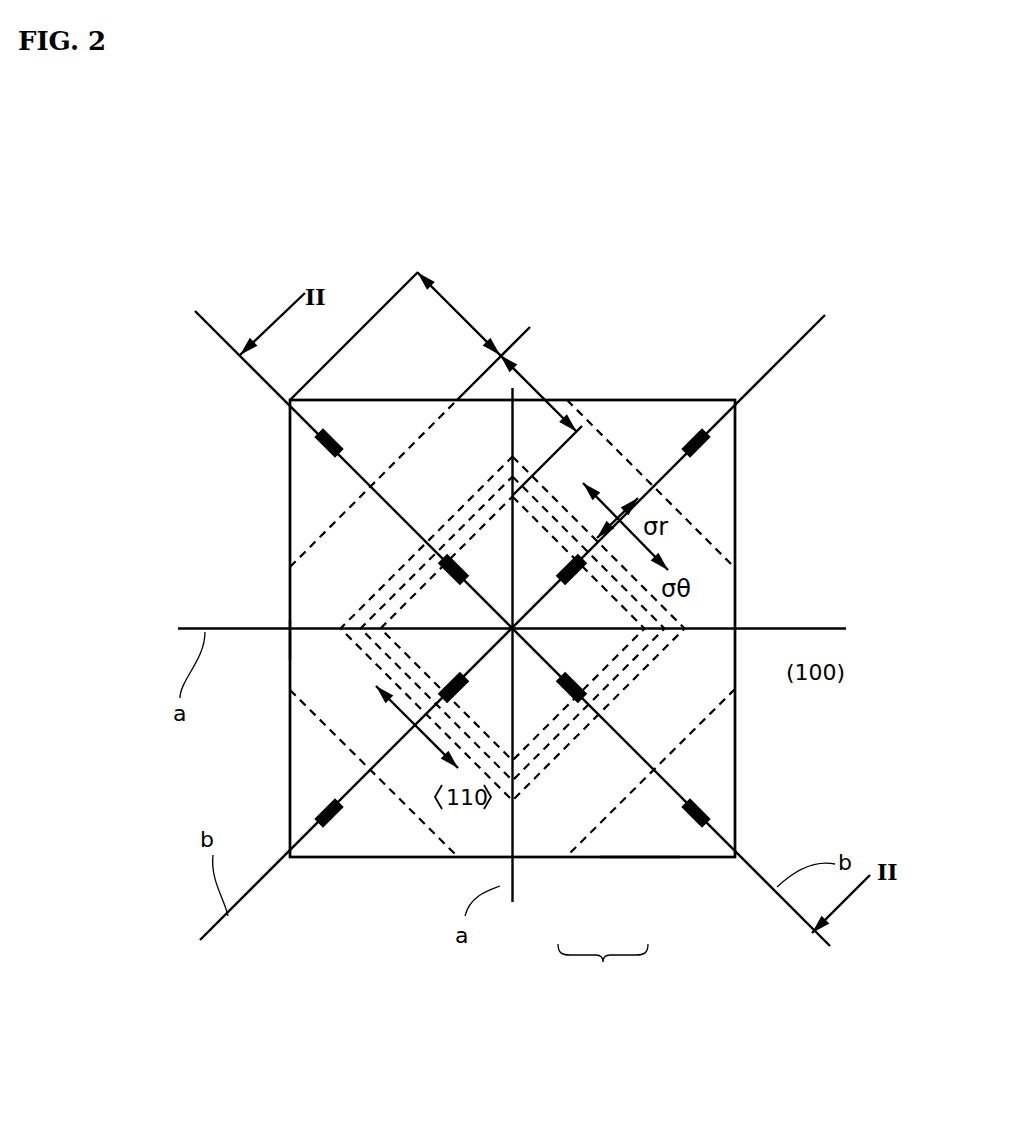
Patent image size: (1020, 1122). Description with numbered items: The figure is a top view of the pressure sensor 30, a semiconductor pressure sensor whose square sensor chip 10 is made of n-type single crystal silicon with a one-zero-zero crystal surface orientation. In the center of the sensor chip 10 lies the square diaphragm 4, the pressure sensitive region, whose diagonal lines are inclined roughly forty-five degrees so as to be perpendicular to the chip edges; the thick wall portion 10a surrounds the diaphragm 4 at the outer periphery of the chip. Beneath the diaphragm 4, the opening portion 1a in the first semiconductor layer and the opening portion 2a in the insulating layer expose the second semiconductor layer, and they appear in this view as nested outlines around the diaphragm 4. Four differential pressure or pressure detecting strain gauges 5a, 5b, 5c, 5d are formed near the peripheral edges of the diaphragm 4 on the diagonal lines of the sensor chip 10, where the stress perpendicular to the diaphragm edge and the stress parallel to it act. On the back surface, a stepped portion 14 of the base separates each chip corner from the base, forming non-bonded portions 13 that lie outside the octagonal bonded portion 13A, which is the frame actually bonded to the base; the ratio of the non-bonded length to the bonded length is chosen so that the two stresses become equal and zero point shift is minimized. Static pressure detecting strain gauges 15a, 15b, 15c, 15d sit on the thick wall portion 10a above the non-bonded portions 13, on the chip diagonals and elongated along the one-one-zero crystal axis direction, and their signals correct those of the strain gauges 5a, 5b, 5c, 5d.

The pressure sensor 30 is at (778, 267).
The non-bonded portion 13 is at (505, 584).
The bonded portion 13A is at (305, 648).
The stepped portion 14 is at (505, 670).
The strain gauge 15a is at (320, 435).
The strain gauge 15b is at (708, 814).
The strain gauge 15c is at (331, 830).
The strain gauge 15d is at (708, 443).
The strain gauge 5a is at (447, 562).
The strain gauge 5b is at (584, 689).
The strain gauge 5c is at (440, 687).
The strain gauge 5d is at (566, 557).
The opening portion 1a is at (627, 607).
The opening portion 2a is at (660, 637).
The diaphragm 4 is at (535, 733).
The thick wall portion 10a is at (635, 860).
The sensor chip 10 is at (603, 966).